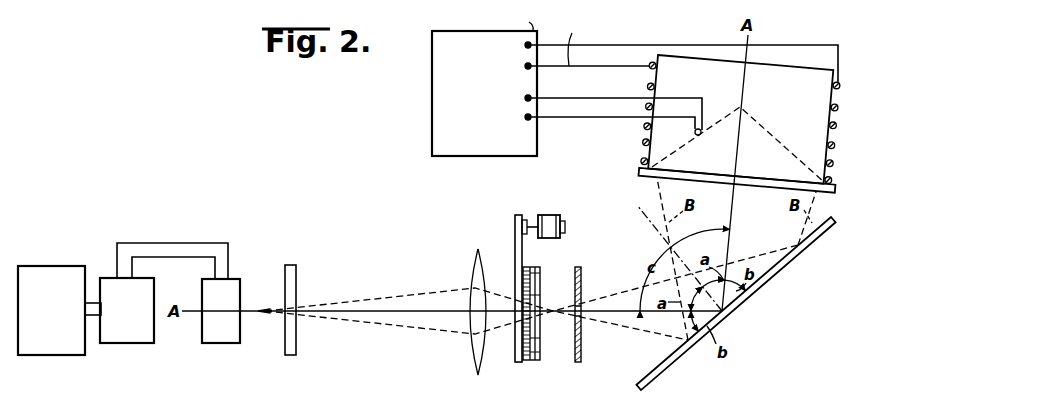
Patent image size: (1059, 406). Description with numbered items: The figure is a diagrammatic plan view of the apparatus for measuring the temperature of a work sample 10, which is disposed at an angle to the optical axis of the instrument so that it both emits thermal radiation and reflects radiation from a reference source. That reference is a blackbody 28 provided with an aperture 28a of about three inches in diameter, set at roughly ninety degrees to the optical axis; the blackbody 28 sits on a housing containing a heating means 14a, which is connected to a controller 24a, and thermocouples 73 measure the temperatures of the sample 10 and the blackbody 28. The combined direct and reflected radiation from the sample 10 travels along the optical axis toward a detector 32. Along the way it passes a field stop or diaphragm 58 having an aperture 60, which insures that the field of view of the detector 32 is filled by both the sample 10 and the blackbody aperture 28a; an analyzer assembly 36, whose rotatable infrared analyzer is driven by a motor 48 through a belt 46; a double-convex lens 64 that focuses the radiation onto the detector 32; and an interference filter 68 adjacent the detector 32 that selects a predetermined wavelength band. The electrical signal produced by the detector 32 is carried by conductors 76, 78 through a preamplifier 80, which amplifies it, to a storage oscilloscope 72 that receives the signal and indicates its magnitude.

The work sample 10 is at (657, 383).
The heating means 14a is at (646, 130).
The controller 24a is at (432, 142).
The blackbody 28 is at (640, 178).
The aperture 28a is at (769, 171).
The detector 32 is at (220, 343).
The analyzer assembly 36 is at (525, 364).
The belt 46 is at (515, 250).
The motor 48 is at (562, 237).
The field stop or diaphragm 58 is at (582, 349).
The aperture 60 is at (582, 301).
The lens 64 is at (468, 353).
The filter 68 is at (296, 274).
The oscilloscope 72 is at (68, 355).
The thermocouples 73 is at (700, 135).
The conductor 76 is at (190, 242).
The conductor 78 is at (92, 256).
The preamplifier 80 is at (130, 343).